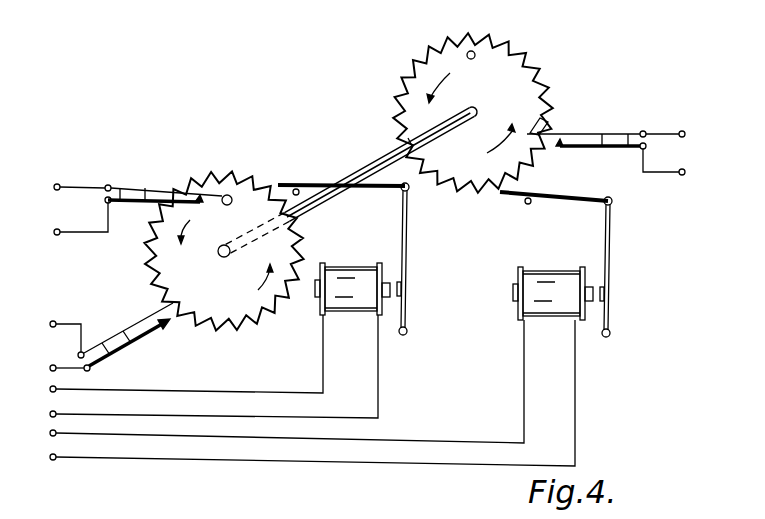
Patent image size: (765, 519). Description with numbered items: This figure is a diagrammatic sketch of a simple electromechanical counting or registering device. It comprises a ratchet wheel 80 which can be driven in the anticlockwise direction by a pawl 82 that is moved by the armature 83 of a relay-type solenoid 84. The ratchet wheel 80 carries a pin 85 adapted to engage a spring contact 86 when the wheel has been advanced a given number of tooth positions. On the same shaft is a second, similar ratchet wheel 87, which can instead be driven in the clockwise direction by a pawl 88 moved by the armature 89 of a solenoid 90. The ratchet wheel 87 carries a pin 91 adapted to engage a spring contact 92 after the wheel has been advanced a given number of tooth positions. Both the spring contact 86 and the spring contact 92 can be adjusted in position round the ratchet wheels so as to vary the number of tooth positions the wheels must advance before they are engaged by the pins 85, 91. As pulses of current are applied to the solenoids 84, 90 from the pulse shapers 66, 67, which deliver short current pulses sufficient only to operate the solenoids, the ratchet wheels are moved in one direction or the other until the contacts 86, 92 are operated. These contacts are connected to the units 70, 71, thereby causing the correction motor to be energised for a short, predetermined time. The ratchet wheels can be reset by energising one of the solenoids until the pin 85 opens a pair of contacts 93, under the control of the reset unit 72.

The ratchet wheel 80 is at (153, 277).
The pawl 82 is at (282, 181).
The armature 83 is at (408, 290).
The solenoid 84 is at (360, 316).
The pin 85 is at (250, 186).
The spring contact 86 is at (186, 296).
The second ratchet wheel 87 is at (532, 96).
The pawl 88 is at (565, 202).
The armature 89 is at (612, 260).
The solenoid 90 is at (551, 280).
The pin 91 is at (474, 58).
The spring contact 92 is at (542, 120).
The pair of contacts 93 is at (185, 186).
The pulse shaper 66 is at (202, 366).
The pulse shaper 67 is at (300, 393).
The unit 70 is at (99, 337).
The unit 71 is at (676, 153).
The reset unit 72 is at (76, 209).